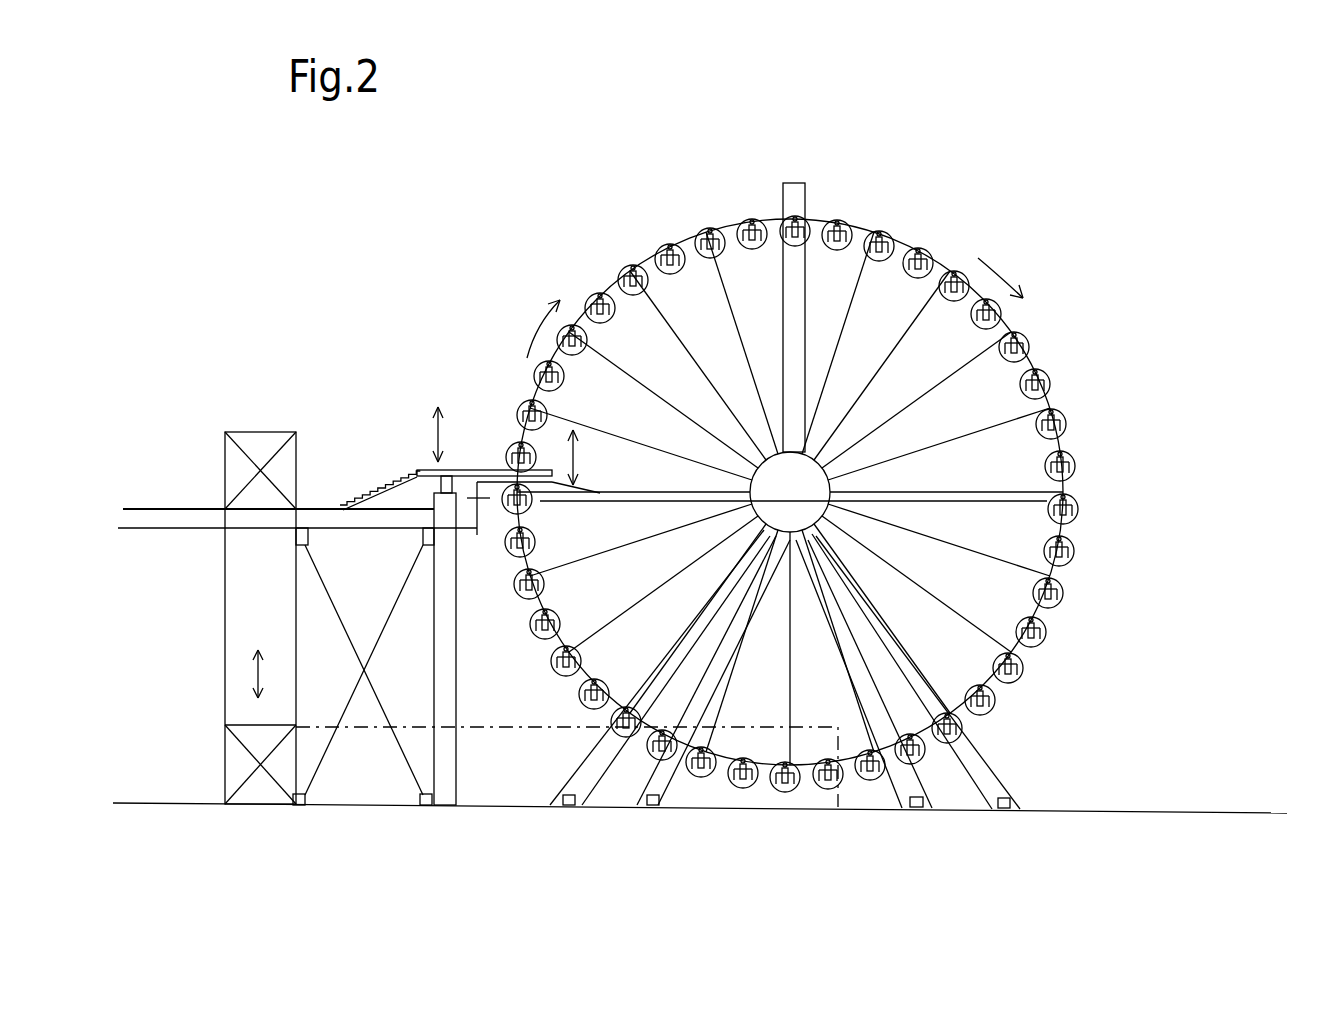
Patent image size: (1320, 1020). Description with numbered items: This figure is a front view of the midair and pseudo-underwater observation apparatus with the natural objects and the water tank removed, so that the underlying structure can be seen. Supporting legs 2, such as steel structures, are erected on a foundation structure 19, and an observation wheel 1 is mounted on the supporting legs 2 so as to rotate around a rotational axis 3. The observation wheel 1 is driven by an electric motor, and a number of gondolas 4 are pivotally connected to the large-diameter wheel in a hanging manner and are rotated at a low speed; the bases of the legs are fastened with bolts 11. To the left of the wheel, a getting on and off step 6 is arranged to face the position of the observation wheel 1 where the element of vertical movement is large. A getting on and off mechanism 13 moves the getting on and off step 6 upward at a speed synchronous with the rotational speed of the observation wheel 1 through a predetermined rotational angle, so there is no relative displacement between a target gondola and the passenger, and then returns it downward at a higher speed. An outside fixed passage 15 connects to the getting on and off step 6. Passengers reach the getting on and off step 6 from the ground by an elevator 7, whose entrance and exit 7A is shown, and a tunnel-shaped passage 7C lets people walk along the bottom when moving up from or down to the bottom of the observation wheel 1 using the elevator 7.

The observation wheel 1 is at (933, 196).
The supporting legs 2 is at (868, 640).
The rotational axis 3 is at (815, 490).
The gondolas 4 is at (675, 255).
The getting on and off step 6 is at (493, 470).
The elevator 7 is at (240, 425).
The entrance and exit of the elevator 7A is at (240, 468).
The passage 7C is at (474, 772).
The bolts 11 is at (571, 797).
The getting on and off mechanism 13 is at (418, 452).
The outside fixed passage 15 is at (337, 470).
The foundation structure 19 is at (1113, 811).